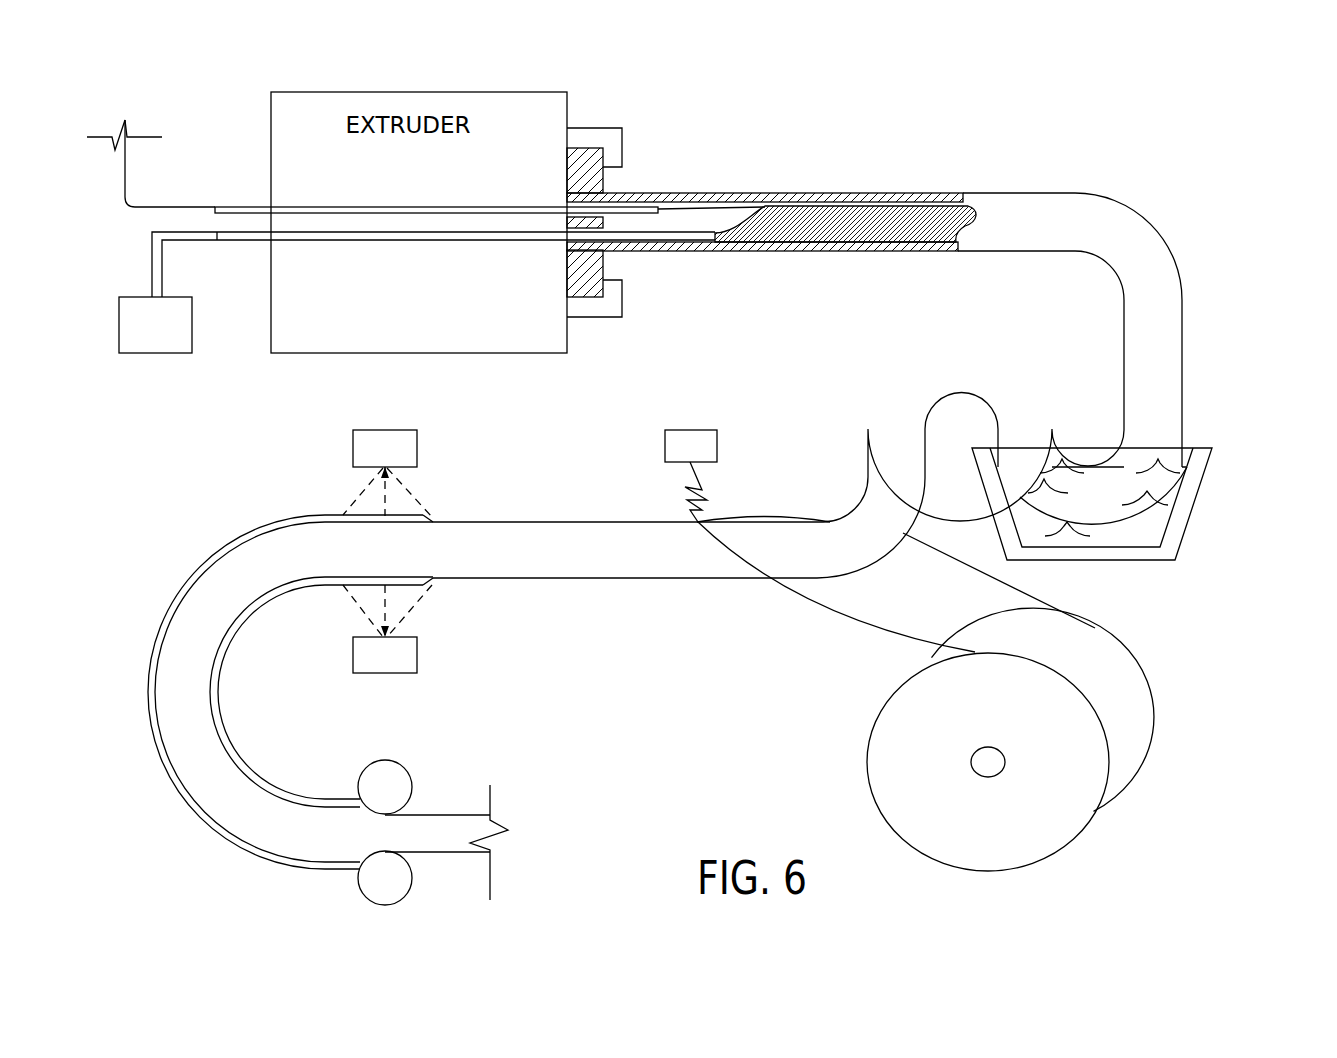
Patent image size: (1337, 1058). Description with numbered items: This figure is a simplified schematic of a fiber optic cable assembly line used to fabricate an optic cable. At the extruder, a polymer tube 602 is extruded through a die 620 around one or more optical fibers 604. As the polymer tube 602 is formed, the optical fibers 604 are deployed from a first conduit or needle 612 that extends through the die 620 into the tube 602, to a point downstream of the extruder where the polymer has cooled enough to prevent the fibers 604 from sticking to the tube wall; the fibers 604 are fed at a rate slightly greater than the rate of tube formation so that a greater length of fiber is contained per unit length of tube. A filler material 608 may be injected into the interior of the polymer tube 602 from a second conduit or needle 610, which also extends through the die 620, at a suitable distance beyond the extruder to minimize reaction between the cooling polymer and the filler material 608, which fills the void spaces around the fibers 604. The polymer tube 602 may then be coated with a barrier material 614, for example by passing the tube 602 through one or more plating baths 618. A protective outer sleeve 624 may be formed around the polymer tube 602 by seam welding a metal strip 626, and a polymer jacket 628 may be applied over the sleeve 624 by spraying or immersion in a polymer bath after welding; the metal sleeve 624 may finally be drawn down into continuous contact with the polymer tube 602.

The polymer tube 602 is at (807, 193).
The optical fibers 604 is at (125, 173).
The filler material 608 is at (833, 223).
The second conduit or needle 610 is at (482, 240).
The first conduit or needle 612 is at (507, 207).
The barrier material 614 is at (1145, 532).
The plating bath 618 is at (1214, 467).
The die 620 is at (603, 177).
The protective outer sleeve 624 is at (668, 562).
The metal strip 626 is at (1155, 720).
The polymer jacket 628 is at (253, 528).